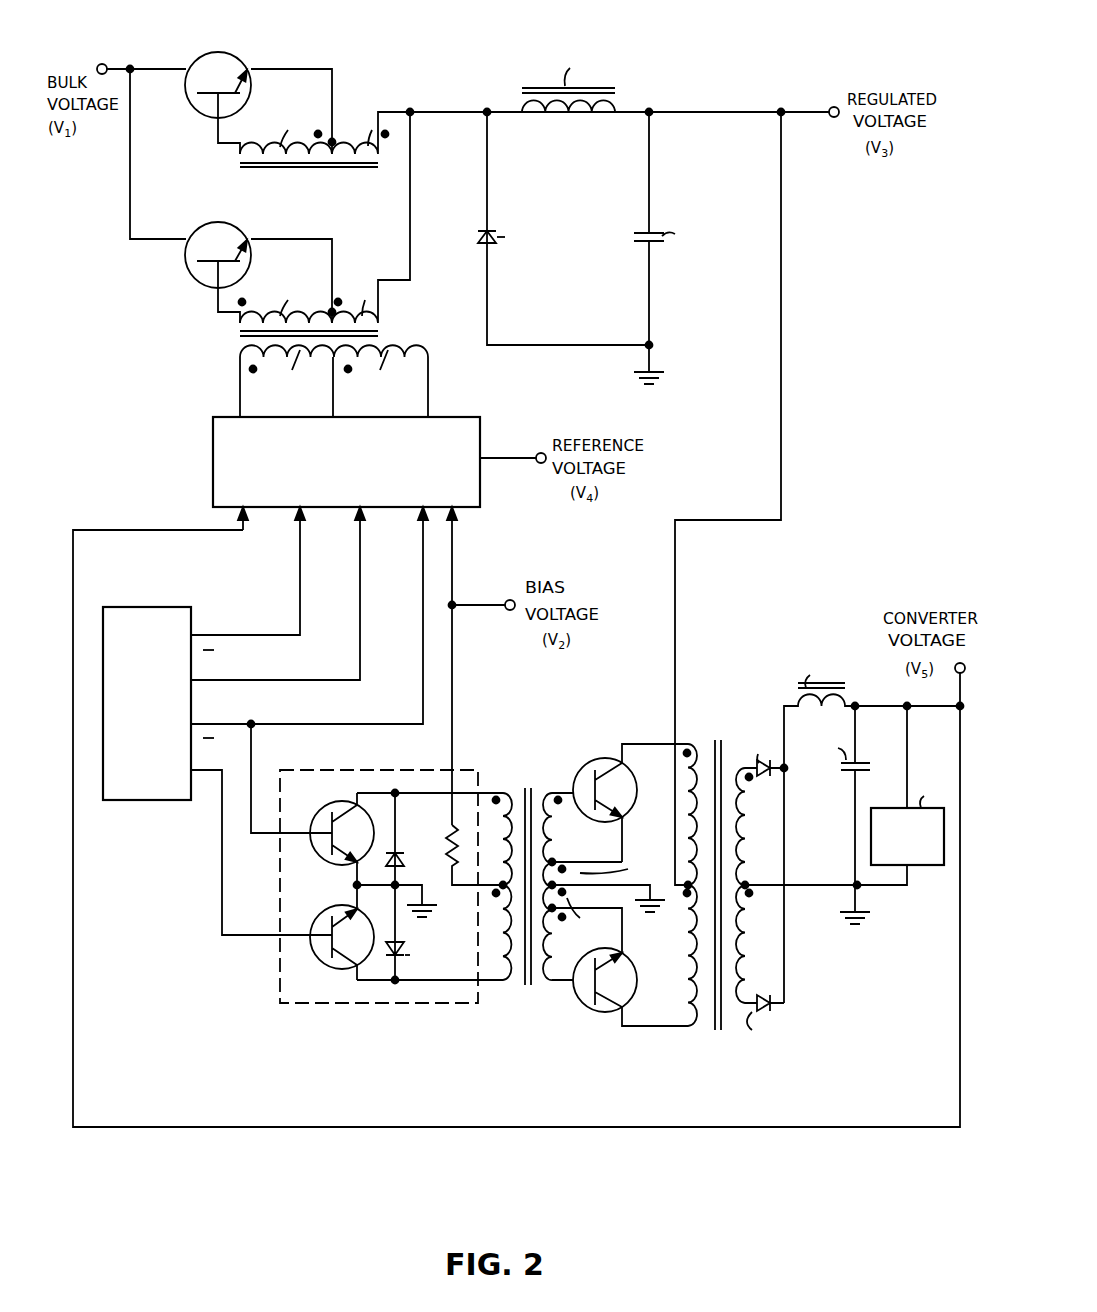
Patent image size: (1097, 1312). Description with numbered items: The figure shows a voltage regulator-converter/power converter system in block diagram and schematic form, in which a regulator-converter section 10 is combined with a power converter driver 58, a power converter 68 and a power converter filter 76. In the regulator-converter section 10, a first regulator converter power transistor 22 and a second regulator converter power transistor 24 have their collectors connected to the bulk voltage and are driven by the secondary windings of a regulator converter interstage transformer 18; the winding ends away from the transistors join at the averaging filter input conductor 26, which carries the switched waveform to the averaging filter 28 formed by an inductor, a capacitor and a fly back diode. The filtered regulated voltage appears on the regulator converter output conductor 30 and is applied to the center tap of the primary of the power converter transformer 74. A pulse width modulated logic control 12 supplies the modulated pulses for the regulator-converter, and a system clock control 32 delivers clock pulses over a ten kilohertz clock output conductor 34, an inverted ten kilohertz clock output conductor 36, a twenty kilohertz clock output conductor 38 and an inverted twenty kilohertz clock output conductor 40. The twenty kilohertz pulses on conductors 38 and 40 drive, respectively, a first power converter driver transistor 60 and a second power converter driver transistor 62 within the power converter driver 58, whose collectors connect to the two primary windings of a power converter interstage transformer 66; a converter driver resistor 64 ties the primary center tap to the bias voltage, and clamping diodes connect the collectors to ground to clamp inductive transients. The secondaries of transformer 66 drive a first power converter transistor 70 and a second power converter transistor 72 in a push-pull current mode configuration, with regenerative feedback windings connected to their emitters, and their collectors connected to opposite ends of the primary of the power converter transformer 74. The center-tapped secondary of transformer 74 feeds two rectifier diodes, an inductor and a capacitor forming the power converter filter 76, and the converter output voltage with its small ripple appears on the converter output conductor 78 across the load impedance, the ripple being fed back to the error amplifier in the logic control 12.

The regulator-converter section 10 is at (331, 23).
The pulse width modulated logic control 12 is at (448, 416).
The regulator converter interstage transformer 18 is at (345, 170).
The first regulator converter power transistor 22 is at (245, 42).
The second regulator converter power transistor 24 is at (245, 212).
The averaging filter input conductor 26 is at (446, 122).
The averaging filter 28 is at (678, 47).
The regulator converter output conductor 30 is at (777, 267).
The system clock control 32 is at (153, 607).
The 10 KHz clock output conductor 34 is at (297, 566).
The inverted 10 KHz clock output conductor 36 is at (358, 560).
The 20 KHz clock output conductor 38 is at (419, 566).
The inverted 20 KHz clock output conductor 40 is at (264, 935).
The power converter driver 58 is at (500, 1046).
The first power converter driver transistor 60 is at (329, 813).
The second power converter driver transistor 62 is at (329, 918).
The converter driver resistor 64 is at (446, 842).
The power converter interstage transformer 66 is at (533, 786).
The power converter 68 is at (758, 1092).
The first power converter transistor 70 is at (575, 761).
The second power converter transistor 72 is at (628, 972).
The power converter transformer 74 is at (722, 742).
The power converter filter 76 is at (922, 1024).
The converter output conductor 78 is at (322, 1135).